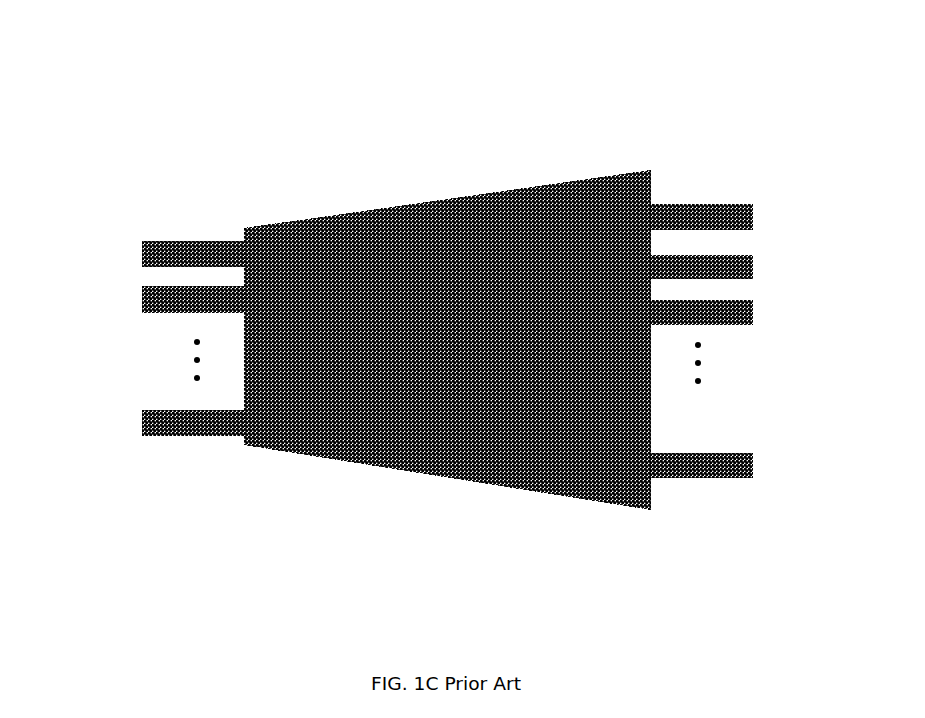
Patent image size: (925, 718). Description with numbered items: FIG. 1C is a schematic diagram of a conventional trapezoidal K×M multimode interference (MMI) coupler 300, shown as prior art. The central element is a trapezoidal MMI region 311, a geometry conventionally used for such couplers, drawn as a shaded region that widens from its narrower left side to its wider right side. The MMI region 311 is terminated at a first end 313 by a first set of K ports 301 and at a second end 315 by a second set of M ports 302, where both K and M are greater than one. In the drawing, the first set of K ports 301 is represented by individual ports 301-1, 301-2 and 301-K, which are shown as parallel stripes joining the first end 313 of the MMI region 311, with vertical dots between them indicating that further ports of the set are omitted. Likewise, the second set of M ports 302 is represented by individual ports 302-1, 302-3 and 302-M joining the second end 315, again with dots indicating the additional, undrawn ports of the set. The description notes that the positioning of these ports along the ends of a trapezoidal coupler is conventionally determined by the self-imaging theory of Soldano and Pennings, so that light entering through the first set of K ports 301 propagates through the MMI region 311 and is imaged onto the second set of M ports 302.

The K×M MMI coupler 300 is at (328, 110).
The MMI region 311 is at (498, 217).
The first end 313 is at (237, 437).
The second end 315 is at (642, 488).
The first set of K ports 301 is at (130, 339).
The first port of the first set 301-1 is at (163, 255).
The second port of the first set 301-2 is at (163, 299).
The K-th port of the first set 301-K is at (162, 423).
The second set of M ports 302 is at (768, 341).
The first port of the second set 302-1 is at (733, 217).
The third port of the second set 302-3 is at (733, 290).
The M-th port of the second set 302-M is at (736, 466).